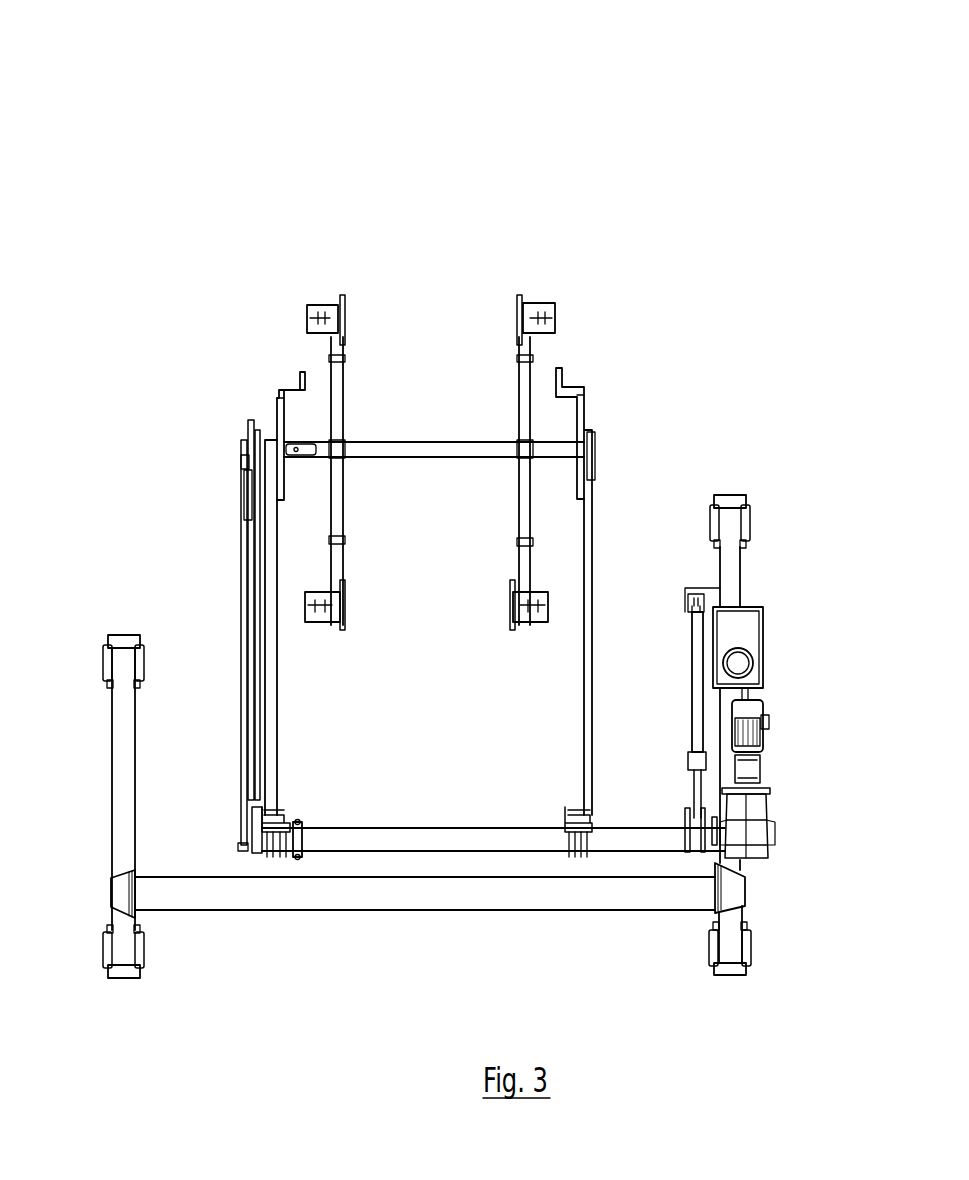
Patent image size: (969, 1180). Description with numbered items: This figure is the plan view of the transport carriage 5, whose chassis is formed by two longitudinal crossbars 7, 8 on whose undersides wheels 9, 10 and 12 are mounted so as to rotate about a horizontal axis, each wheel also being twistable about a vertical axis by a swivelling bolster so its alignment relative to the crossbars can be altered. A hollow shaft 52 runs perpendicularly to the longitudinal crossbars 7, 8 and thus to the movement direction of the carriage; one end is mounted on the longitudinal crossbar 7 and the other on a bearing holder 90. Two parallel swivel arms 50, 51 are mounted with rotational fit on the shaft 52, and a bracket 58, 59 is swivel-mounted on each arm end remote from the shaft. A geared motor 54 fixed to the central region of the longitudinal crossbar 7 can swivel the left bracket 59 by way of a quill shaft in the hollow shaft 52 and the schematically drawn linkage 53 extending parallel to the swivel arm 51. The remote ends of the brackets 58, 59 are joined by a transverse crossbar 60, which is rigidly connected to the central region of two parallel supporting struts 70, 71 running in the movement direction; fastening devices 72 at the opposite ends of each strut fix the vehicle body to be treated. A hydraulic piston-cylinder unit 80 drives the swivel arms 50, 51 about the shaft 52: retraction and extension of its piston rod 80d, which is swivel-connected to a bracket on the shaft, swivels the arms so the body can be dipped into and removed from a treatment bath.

The transport carriage 5 is at (164, 133).
The longitudinal crossbar 7 is at (738, 880).
The longitudinal crossbar 8 is at (120, 905).
The wheel 9 is at (148, 978).
The wheel 10 is at (105, 658).
The wheel 12 is at (752, 975).
The swivel arm 50 is at (590, 690).
The swivel arm 51 is at (270, 775).
The shaft 52 is at (420, 835).
The linkage 53 is at (245, 606).
The geared motor 54 is at (765, 740).
The bracket 58 is at (585, 480).
The bracket 59 is at (283, 487).
The transverse crossbar 60 is at (415, 440).
The supporting strut 70 is at (343, 480).
The supporting strut 71 is at (520, 486).
The fastening devices 72 is at (316, 305).
The hydraulic piston-cylinder unit 80 is at (692, 697).
The piston rod 80d is at (692, 793).
The bearing holder 90 is at (300, 860).